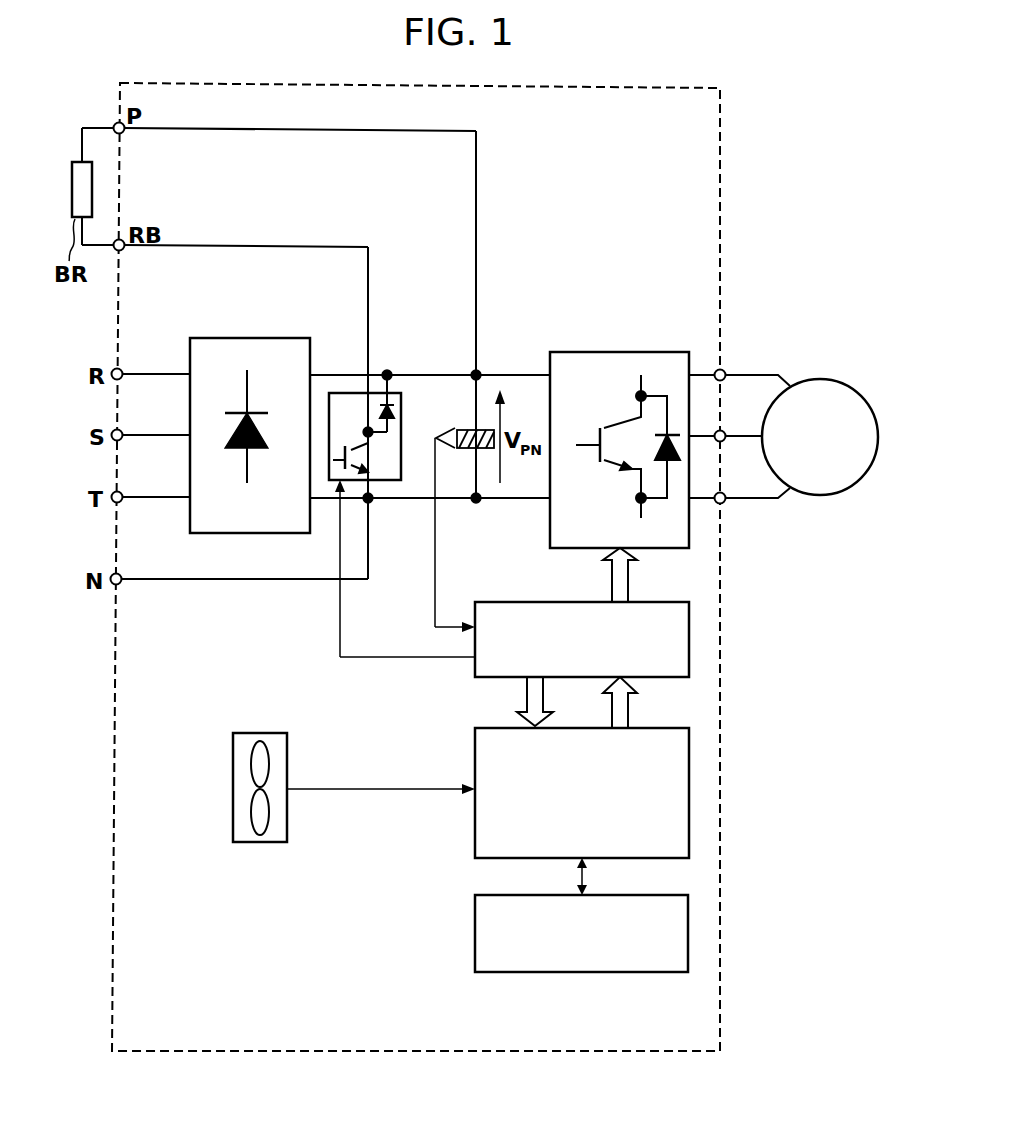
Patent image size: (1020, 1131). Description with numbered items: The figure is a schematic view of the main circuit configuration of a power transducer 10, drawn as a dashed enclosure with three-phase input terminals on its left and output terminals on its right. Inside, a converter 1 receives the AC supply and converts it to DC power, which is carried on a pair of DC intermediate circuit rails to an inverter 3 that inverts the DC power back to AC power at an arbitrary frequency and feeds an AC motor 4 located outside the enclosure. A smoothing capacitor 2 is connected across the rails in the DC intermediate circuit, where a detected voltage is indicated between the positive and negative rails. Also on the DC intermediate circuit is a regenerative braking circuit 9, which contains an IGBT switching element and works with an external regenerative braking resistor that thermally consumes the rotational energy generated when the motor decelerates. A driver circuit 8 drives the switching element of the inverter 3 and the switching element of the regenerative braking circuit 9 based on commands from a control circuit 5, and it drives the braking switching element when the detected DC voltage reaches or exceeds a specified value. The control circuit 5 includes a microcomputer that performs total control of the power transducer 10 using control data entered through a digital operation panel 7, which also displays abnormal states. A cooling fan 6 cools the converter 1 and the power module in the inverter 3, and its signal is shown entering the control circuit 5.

The converter 1 is at (223, 338).
The smoothing capacitor 2 is at (459, 431).
The inverter 3 is at (653, 352).
The AC motor 4 is at (813, 380).
The control circuit 5 is at (475, 839).
The cooling fan 6 is at (233, 805).
The digital operation panel 7 is at (475, 960).
The driver circuit 8 is at (475, 665).
The regenerative braking circuit 9 is at (401, 445).
The power transducer 10 is at (720, 207).